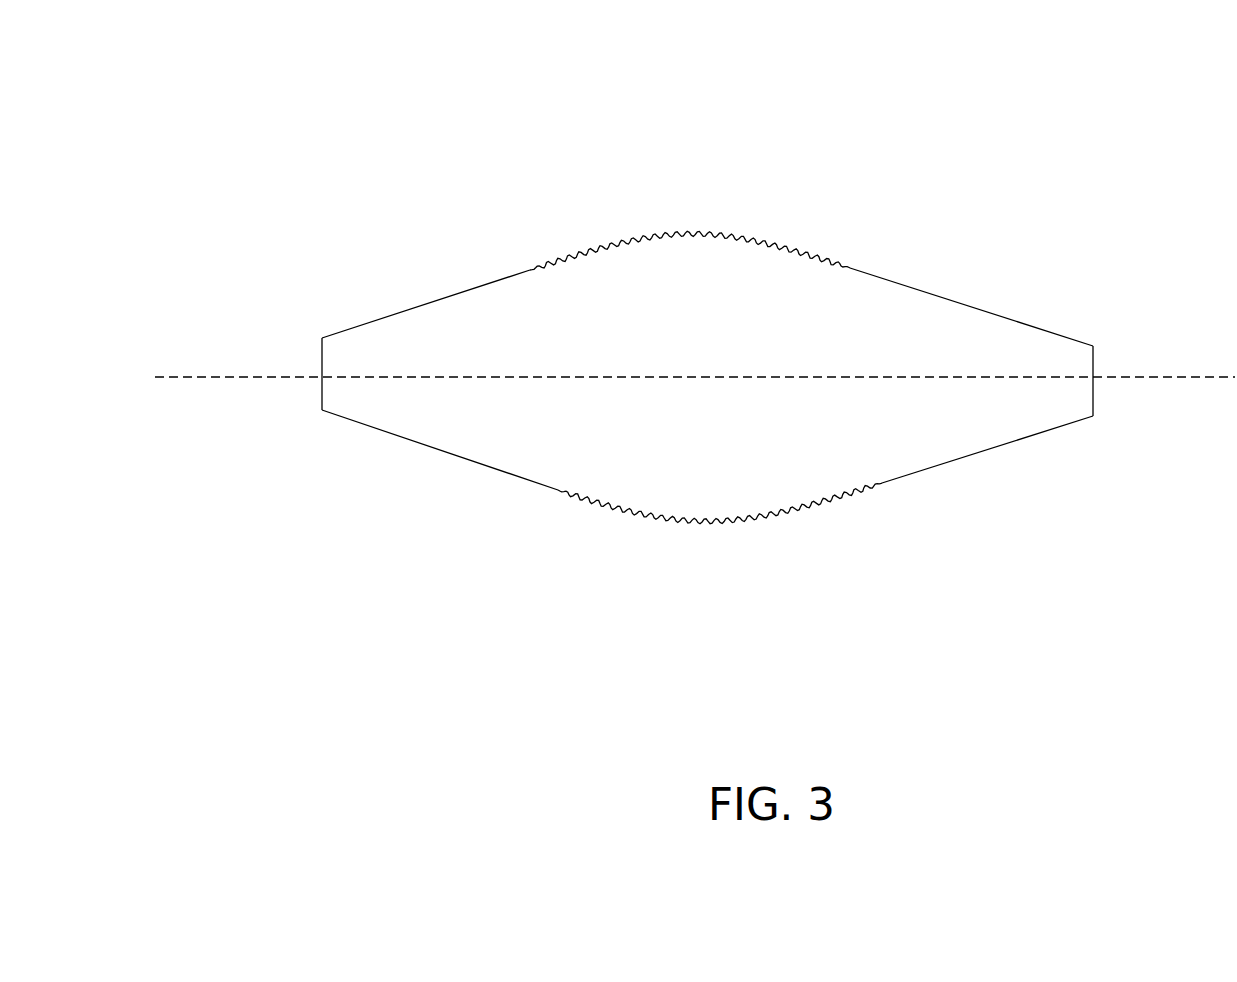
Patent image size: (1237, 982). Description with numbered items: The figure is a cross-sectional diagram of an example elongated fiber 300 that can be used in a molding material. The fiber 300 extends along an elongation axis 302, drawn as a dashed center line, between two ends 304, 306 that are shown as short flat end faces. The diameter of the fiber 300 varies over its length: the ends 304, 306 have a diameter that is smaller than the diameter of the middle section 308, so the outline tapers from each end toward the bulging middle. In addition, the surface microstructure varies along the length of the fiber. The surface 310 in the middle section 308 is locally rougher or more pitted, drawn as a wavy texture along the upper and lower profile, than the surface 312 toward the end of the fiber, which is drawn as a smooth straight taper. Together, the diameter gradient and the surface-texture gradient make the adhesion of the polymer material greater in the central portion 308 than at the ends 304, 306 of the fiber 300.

The elongated fiber 300 is at (414, 188).
The elongation axis 302 is at (1192, 378).
The end of the fiber 304 is at (1093, 416).
The end of the fiber 306 is at (322, 410).
The middle section 308 is at (777, 515).
The surface of the fiber in the middle section 310 is at (712, 234).
The surface at the end of the fiber 312 is at (1013, 317).